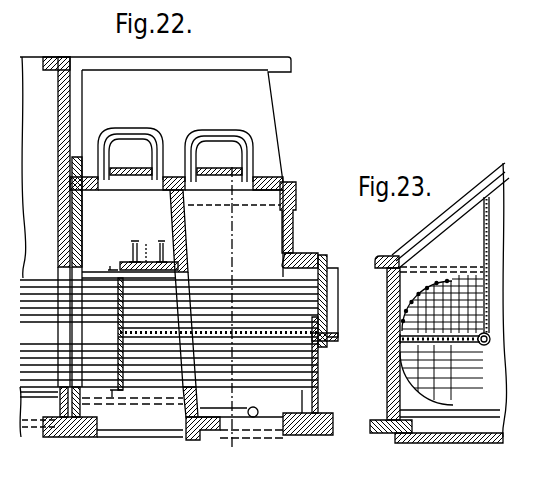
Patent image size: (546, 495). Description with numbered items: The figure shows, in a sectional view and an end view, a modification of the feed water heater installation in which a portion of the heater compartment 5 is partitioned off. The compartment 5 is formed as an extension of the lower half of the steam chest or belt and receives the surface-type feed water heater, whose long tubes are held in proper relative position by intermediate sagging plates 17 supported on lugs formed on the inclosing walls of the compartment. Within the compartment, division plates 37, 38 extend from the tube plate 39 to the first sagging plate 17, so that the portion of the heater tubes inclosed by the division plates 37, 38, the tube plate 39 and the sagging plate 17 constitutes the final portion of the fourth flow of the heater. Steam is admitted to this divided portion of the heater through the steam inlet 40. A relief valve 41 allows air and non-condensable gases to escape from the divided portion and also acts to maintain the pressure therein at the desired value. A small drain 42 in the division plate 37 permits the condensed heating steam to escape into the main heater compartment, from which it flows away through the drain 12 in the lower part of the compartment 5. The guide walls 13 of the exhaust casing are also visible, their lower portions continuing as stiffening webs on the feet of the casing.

In FIG. 23, the compartment 5 is at (388, 372).
In FIG. 22, the drain 12 is at (256, 418).
In FIG. 22, the guide wall 13 is at (64, 241).
In FIG. 22, the sagging plate 17 is at (118, 268).
In FIG. 22, the division plate 37 is at (262, 338).
In FIG. 23, the division plate 37 is at (427, 344).
In FIG. 22, the division plate 38 is at (235, 307).
In FIG. 23, the division plate 38 is at (489, 271).
In FIG. 22, the tube plate 39 is at (322, 293).
In FIG. 22, the steam inlet 40 is at (290, 212).
In FIG. 22, the relief valve 41 is at (144, 250).
In FIG. 22, the small drain 42 is at (142, 332).
In FIG. 23, the small drain 42 is at (462, 345).